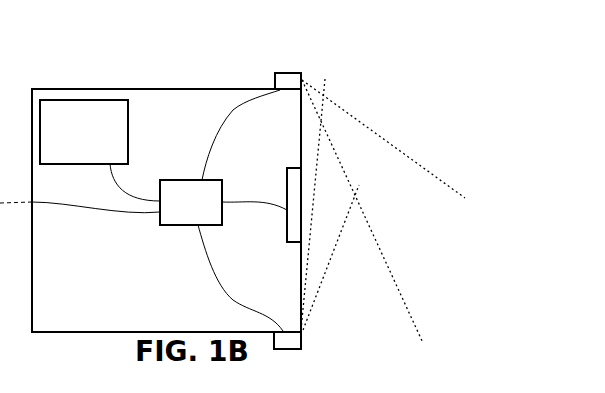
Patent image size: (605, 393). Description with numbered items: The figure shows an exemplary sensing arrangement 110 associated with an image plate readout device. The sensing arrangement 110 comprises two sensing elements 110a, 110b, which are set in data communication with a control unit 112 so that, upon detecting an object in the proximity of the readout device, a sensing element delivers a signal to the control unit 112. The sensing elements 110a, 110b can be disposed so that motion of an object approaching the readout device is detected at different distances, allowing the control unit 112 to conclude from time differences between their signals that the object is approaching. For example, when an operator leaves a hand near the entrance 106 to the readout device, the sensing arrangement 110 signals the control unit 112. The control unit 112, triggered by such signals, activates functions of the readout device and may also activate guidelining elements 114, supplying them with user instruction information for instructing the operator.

The sensing arrangement 110 is at (183, 76).
The sensing element 110a is at (343, 60).
The sensing element 110b is at (303, 344).
The entrance 106 is at (282, 167).
The control unit 112 is at (191, 202).
The guidelining elements 114 is at (84, 132).